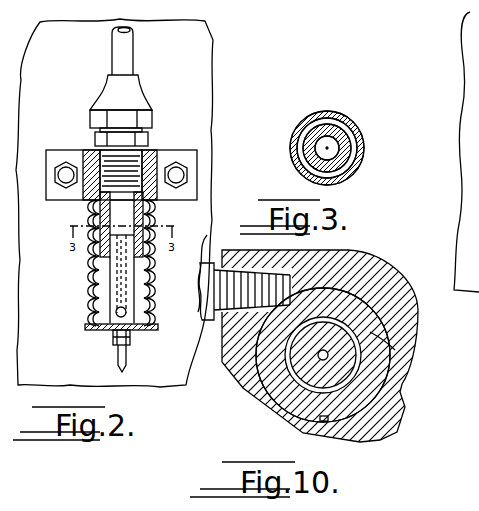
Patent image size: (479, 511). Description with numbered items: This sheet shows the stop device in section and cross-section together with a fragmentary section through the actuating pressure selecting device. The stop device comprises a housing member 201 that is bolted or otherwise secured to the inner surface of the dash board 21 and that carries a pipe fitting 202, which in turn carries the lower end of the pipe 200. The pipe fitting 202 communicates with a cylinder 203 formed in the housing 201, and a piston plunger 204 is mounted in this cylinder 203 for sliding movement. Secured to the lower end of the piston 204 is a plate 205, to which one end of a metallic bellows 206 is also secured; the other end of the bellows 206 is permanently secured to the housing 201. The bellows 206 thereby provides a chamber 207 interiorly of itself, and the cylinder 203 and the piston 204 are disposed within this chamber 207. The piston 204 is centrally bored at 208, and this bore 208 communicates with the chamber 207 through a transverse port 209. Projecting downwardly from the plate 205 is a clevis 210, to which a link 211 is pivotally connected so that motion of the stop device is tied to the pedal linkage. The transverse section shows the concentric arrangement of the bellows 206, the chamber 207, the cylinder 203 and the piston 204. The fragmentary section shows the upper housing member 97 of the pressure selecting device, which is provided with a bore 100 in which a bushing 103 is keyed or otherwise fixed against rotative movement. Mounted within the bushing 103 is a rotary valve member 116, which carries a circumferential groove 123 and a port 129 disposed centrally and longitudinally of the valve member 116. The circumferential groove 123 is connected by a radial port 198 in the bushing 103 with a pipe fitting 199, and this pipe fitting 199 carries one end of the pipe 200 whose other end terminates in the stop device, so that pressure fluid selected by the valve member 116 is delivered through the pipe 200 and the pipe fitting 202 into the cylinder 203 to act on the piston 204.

In FIG. 2, the pipe 200 is at (127, 47).
In FIG. 2, the dash board 21 is at (197, 51).
In FIG. 2, the pipe fitting 202 is at (146, 121).
In FIG. 2, the housing member 201 is at (153, 157).
In FIG. 2, the cylinder 203 is at (109, 214).
In FIG. 3, the cylinder 203 is at (346, 140).
In FIG. 2, the piston plunger 204 is at (110, 268).
In FIG. 3, the piston plunger 204 is at (334, 150).
In FIG. 2, the central bore 208 is at (126, 268).
In FIG. 2, the metallic bellows 206 is at (94, 313).
In FIG. 3, the metallic bellows 206 is at (336, 113).
In FIG. 2, the chamber 207 is at (100, 291).
In FIG. 3, the chamber 207 is at (339, 128).
In FIG. 2, the plate 205 is at (106, 331).
In FIG. 2, the transverse port 209 is at (127, 316).
In FIG. 2, the clevis 210 is at (132, 346).
In FIG. 2, the link 211 is at (118, 362).
In FIG. 10, the upper housing member 97 is at (370, 275).
In FIG. 10, the bore 100 is at (372, 301).
In FIG. 10, the bushing 103 is at (385, 333).
In FIG. 10, the circumferential groove 123 is at (398, 349).
In FIG. 10, the rotary valve member 116 is at (330, 362).
In FIG. 10, the port 129 is at (300, 368).
In FIG. 10, the pipe fitting 199 is at (202, 262).
In FIG. 10, the radial port 198 is at (274, 306).